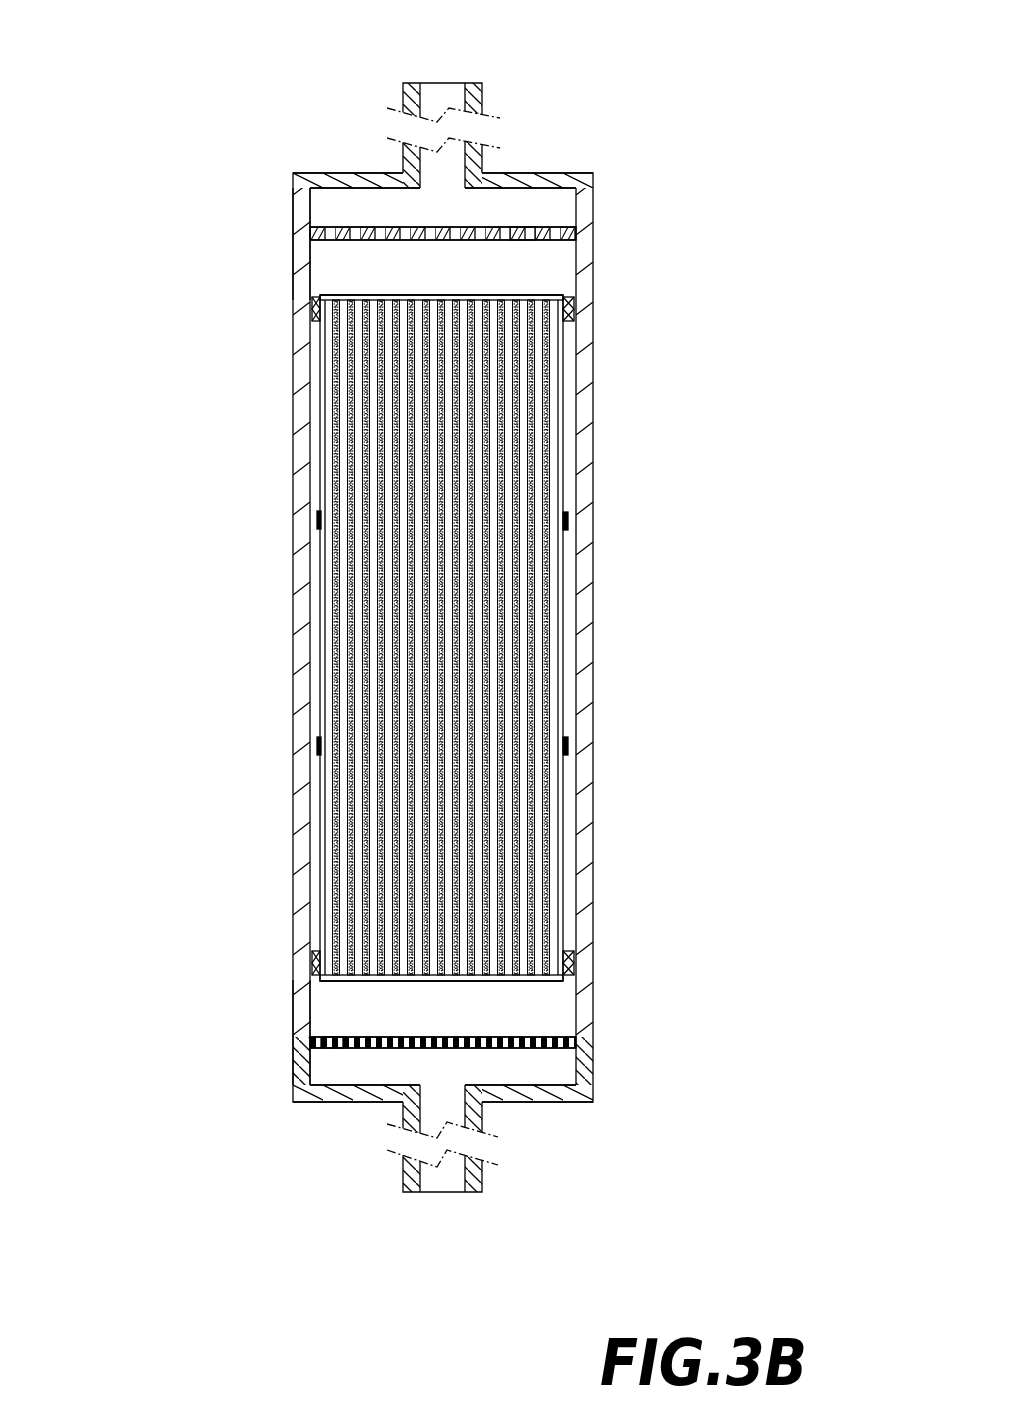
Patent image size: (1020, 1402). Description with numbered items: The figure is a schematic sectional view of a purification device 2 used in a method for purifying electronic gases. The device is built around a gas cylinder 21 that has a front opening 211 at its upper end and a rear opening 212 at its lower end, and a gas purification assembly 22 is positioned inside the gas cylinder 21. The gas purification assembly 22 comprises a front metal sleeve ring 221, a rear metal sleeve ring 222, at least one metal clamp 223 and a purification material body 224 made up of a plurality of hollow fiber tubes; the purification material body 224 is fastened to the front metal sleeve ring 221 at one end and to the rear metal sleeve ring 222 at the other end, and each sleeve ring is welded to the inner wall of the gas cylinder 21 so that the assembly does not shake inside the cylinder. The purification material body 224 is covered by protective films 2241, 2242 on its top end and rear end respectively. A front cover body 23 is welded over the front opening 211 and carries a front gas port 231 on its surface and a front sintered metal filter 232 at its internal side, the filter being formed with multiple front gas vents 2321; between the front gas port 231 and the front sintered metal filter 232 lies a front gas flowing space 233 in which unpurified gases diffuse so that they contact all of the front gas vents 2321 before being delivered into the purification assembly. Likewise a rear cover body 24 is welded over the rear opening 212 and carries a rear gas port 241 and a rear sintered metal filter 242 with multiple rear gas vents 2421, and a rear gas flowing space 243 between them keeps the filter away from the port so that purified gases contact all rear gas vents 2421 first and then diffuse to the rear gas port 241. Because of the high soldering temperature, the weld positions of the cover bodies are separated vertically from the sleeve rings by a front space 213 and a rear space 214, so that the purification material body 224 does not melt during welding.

The purification device 2 is at (675, 118).
The gas cylinder 21 is at (120, 250).
The front opening 211 is at (293, 246).
The rear opening 212 is at (293, 1024).
The front space 213 is at (328, 276).
The rear space 214 is at (330, 1012).
The gas purification assembly 22 is at (750, 250).
The front metal sleeve ring 221 is at (572, 318).
The rear metal sleeve ring 222 is at (573, 962).
The metal clamp 223 is at (575, 515).
The purification material body 224 is at (548, 462).
The protective film 2241 is at (530, 297).
The protective film 2242 is at (538, 982).
The front cover body 23 is at (340, 173).
The front gas port 231 is at (443, 82).
The front sintered metal filter 232 is at (543, 228).
The front gas vents 2321 is at (533, 232).
The front gas flowing space 233 is at (335, 211).
The rear cover body 24 is at (562, 1103).
The rear gas port 241 is at (443, 1193).
The rear sintered metal filter 242 is at (352, 1047).
The rear gas vents 2421 is at (335, 1043).
The rear gas flowing space 243 is at (543, 1065).